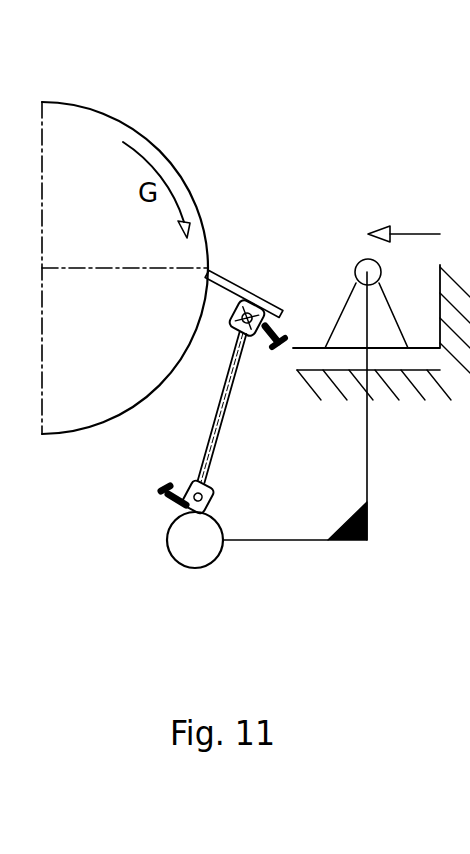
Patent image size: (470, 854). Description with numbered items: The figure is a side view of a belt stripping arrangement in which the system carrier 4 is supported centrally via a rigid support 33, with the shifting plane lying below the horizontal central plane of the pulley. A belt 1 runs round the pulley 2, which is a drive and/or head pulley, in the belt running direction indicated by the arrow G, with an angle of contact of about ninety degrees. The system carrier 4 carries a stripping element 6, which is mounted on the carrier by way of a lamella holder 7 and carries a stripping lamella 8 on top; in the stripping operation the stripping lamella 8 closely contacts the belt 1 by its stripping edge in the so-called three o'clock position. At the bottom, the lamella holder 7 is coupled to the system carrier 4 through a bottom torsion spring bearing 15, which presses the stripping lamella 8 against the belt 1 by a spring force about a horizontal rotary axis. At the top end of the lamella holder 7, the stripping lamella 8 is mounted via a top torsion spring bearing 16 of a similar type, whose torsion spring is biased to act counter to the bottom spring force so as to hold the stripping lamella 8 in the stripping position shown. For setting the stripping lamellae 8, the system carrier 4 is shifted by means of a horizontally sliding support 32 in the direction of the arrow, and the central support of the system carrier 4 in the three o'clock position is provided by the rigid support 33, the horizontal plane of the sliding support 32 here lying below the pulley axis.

The belt 1 is at (168, 158).
The pulley 2 is at (93, 152).
The system carrier 4 is at (177, 557).
The stripping element 6 is at (147, 456).
The lamella holder 7 is at (226, 413).
The stripping lamella 8 is at (255, 283).
The bottom torsion spring bearing 15 is at (238, 490).
The top torsion spring bearing 16 is at (215, 344).
The horizontally sliding support 32 is at (330, 360).
The rigid support 33 is at (367, 445).